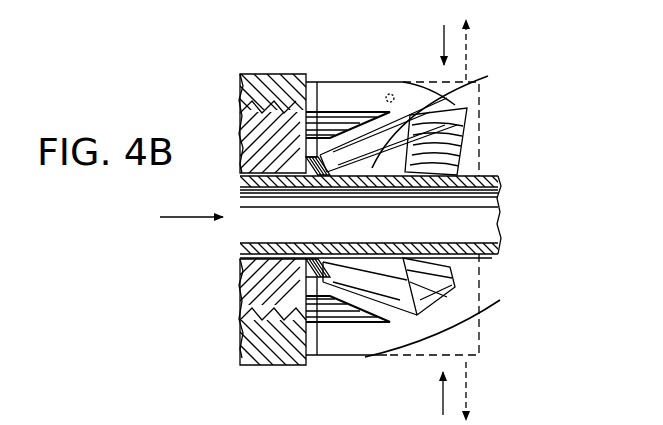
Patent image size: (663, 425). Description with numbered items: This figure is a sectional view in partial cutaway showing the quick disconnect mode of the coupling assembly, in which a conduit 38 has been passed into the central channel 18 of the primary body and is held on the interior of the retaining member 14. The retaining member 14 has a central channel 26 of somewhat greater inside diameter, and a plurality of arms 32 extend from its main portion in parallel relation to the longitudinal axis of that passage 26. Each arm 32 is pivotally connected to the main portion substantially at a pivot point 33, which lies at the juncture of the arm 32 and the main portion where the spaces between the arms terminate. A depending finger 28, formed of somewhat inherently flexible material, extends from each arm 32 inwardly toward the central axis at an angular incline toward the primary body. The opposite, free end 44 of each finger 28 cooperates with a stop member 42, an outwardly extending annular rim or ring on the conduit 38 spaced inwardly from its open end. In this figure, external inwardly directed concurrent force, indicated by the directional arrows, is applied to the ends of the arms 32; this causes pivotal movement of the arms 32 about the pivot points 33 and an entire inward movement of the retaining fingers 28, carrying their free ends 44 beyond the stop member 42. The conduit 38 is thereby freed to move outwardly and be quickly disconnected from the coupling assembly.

The retaining member 14 is at (485, 58).
The central channel 18 is at (183, 222).
The central channel 26 is at (452, 157).
The retaining finger 28 is at (488, 76).
The arm 32 is at (351, 82).
The pivot point 33 is at (390, 94).
The conduit 38 is at (492, 176).
The stop member 42 is at (306, 157).
The free end 44 is at (330, 155).